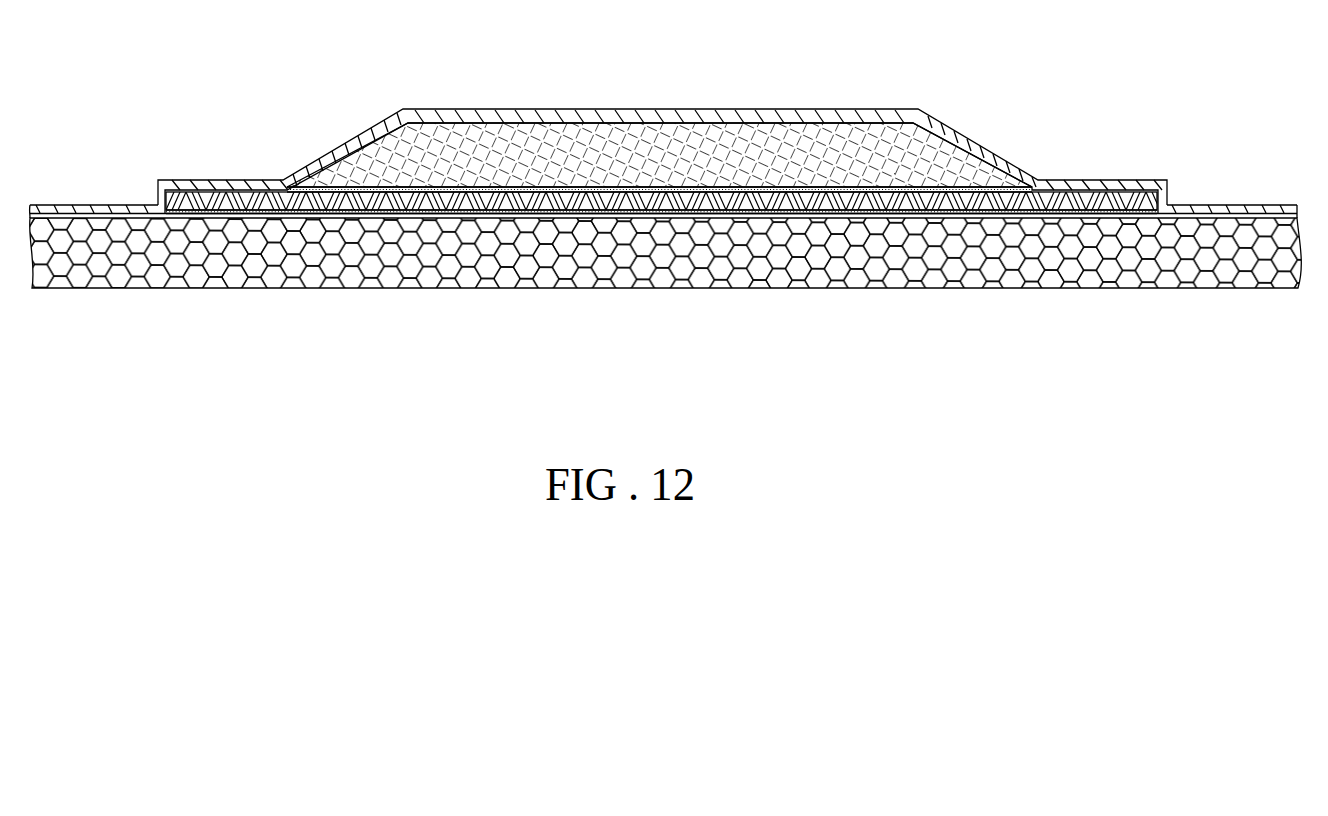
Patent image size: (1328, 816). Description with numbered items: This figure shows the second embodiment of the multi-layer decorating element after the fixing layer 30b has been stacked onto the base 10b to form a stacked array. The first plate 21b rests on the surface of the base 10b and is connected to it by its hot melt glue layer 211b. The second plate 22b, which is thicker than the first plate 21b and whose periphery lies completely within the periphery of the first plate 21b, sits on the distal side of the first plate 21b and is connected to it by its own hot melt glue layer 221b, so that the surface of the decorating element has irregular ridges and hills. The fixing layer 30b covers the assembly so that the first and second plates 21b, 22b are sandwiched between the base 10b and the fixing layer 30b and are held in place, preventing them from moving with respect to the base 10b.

The base 10b is at (542, 280).
The first plate 21b is at (643, 210).
The hot melt glue layer 211b is at (720, 213).
The second plate 22b is at (673, 148).
The hot melt glue layer 221b is at (745, 187).
The fixing layer 30b is at (572, 110).